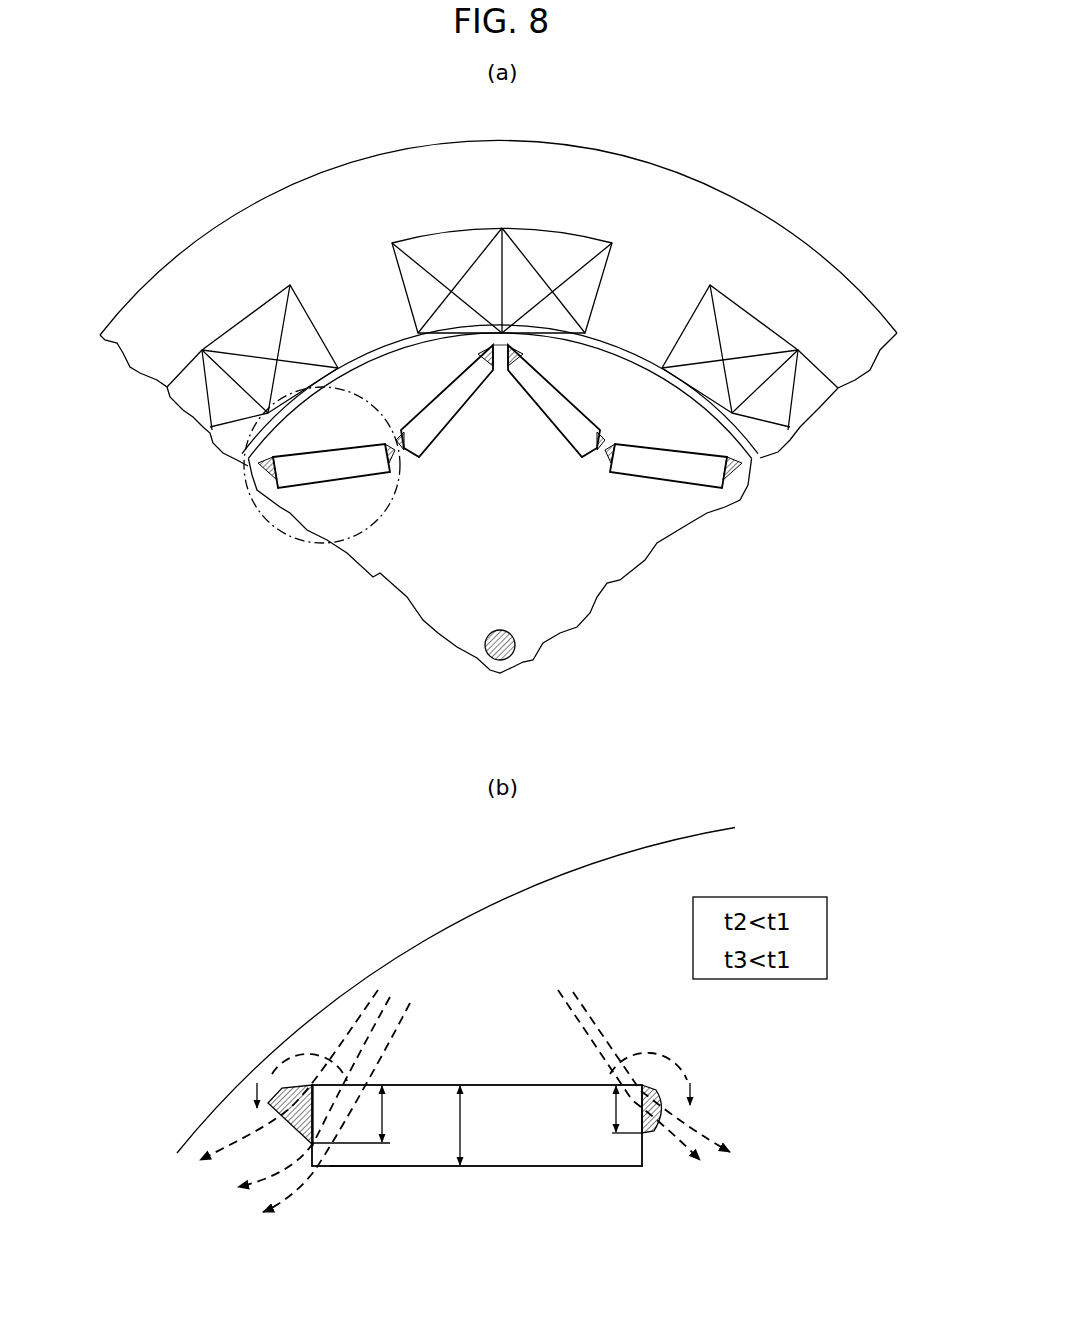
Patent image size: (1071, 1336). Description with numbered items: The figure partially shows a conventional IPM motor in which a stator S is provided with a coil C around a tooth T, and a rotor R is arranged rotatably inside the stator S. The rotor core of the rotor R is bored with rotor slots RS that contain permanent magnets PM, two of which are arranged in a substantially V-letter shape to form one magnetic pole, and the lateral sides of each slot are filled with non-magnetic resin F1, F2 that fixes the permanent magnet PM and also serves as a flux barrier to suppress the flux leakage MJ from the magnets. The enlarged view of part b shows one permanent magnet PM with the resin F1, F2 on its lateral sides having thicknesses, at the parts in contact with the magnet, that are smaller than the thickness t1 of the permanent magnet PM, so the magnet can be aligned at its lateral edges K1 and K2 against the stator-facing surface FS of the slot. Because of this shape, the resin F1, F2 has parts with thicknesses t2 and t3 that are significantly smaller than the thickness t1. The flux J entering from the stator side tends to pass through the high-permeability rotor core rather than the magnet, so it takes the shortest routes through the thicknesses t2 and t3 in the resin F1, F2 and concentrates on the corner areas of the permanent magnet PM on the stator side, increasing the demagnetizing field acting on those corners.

The stator S is at (190, 267).
The tooth T is at (367, 330).
The coil C is at (450, 245).
The rotor R is at (640, 550).
The rotor slot RS is at (240, 449).
The permanent magnet PM is at (327, 473).
The non-magnetic resin F1 is at (262, 478).
The non-magnetic resin F2 is at (396, 450).
The part b is at (290, 550).
The stator facing surface FS is at (287, 1120).
The lateral edge K1 is at (308, 1155).
The lateral edge K2 is at (655, 1137).
The flux J is at (465, 1085).
The flux leakage MJ is at (479, 1053).
The thickness of the permanent magnet t1 is at (477, 1125).
The resin thickness t2 is at (268, 1082).
The resin thickness t3 is at (667, 1104).